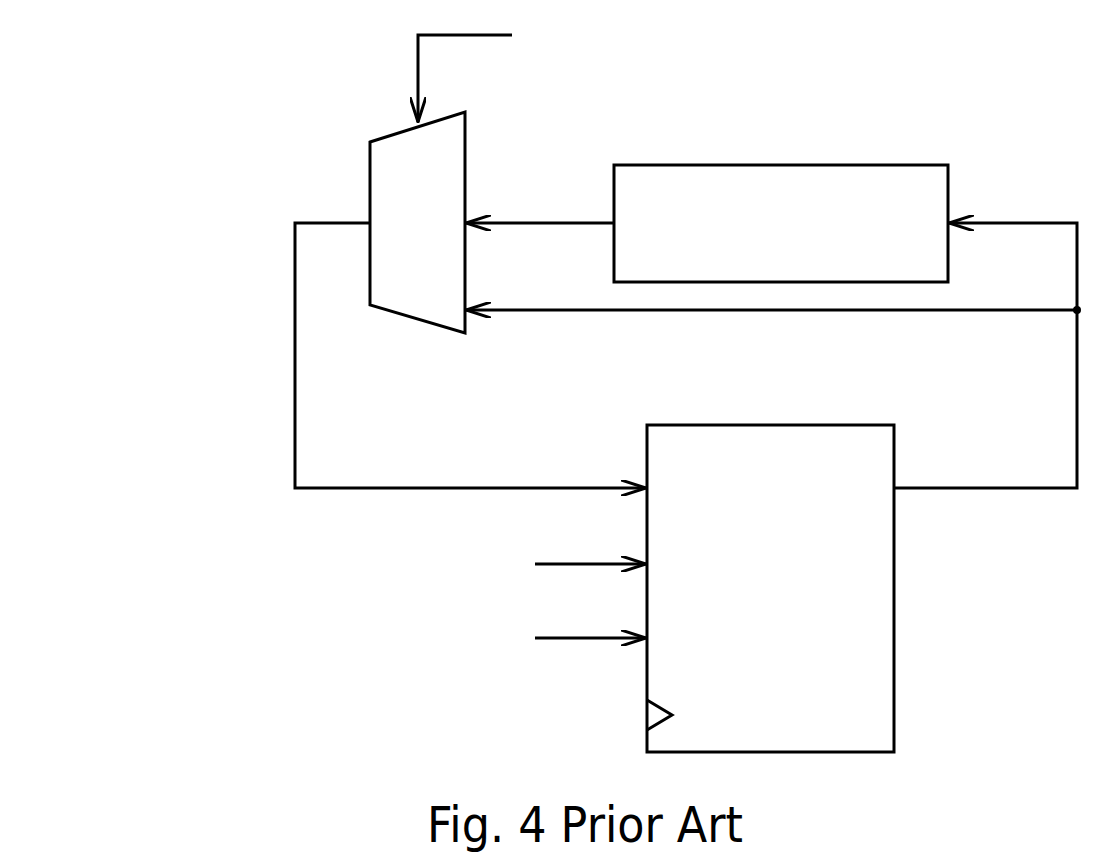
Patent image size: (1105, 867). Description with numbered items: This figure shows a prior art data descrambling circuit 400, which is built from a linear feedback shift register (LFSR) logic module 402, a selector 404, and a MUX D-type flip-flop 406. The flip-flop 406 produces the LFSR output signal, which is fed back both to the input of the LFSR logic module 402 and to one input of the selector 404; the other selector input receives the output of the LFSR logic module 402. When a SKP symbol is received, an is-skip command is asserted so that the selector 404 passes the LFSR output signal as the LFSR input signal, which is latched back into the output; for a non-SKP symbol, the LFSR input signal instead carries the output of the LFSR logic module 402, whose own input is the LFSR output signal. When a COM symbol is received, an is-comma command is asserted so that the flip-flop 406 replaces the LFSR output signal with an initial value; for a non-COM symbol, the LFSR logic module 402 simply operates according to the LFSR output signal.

The data descrambling circuit 400 is at (210, 95).
The linear feedback shift register (LFSR) logic module 402 is at (928, 165).
The selector 404 is at (465, 133).
The MUX D-type flip-flop 406 is at (870, 425).